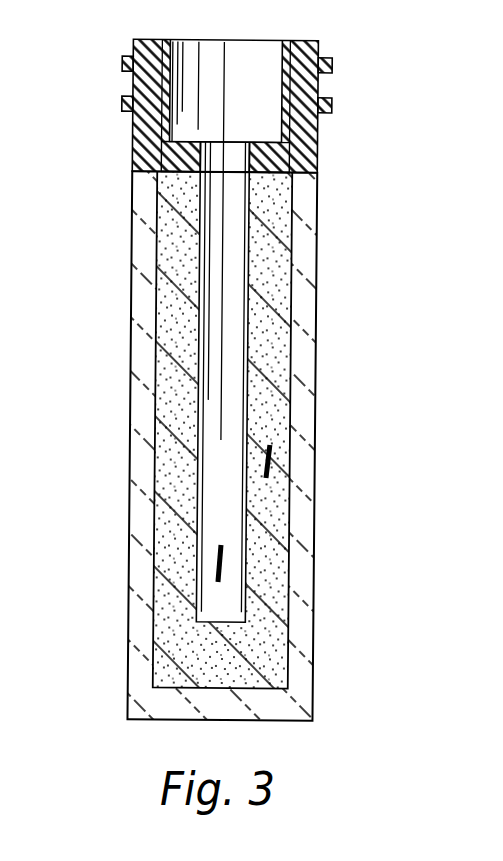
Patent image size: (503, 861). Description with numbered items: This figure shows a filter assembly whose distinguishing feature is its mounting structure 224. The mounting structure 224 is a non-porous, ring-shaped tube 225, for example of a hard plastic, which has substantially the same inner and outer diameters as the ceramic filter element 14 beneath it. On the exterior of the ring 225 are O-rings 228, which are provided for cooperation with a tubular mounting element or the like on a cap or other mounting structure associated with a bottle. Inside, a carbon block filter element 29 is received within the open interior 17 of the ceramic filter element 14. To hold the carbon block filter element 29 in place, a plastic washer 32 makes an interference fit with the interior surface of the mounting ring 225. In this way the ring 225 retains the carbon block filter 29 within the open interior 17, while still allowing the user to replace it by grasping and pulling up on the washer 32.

The ceramic filter element 14 is at (139, 323).
The open interior 17 is at (223, 565).
The carbon block filter element 29 is at (268, 462).
The plastic washer 32 is at (259, 141).
The mounting structure 224 is at (254, 106).
The mounting ring 225 is at (329, 84).
The O-rings 228 is at (116, 105).